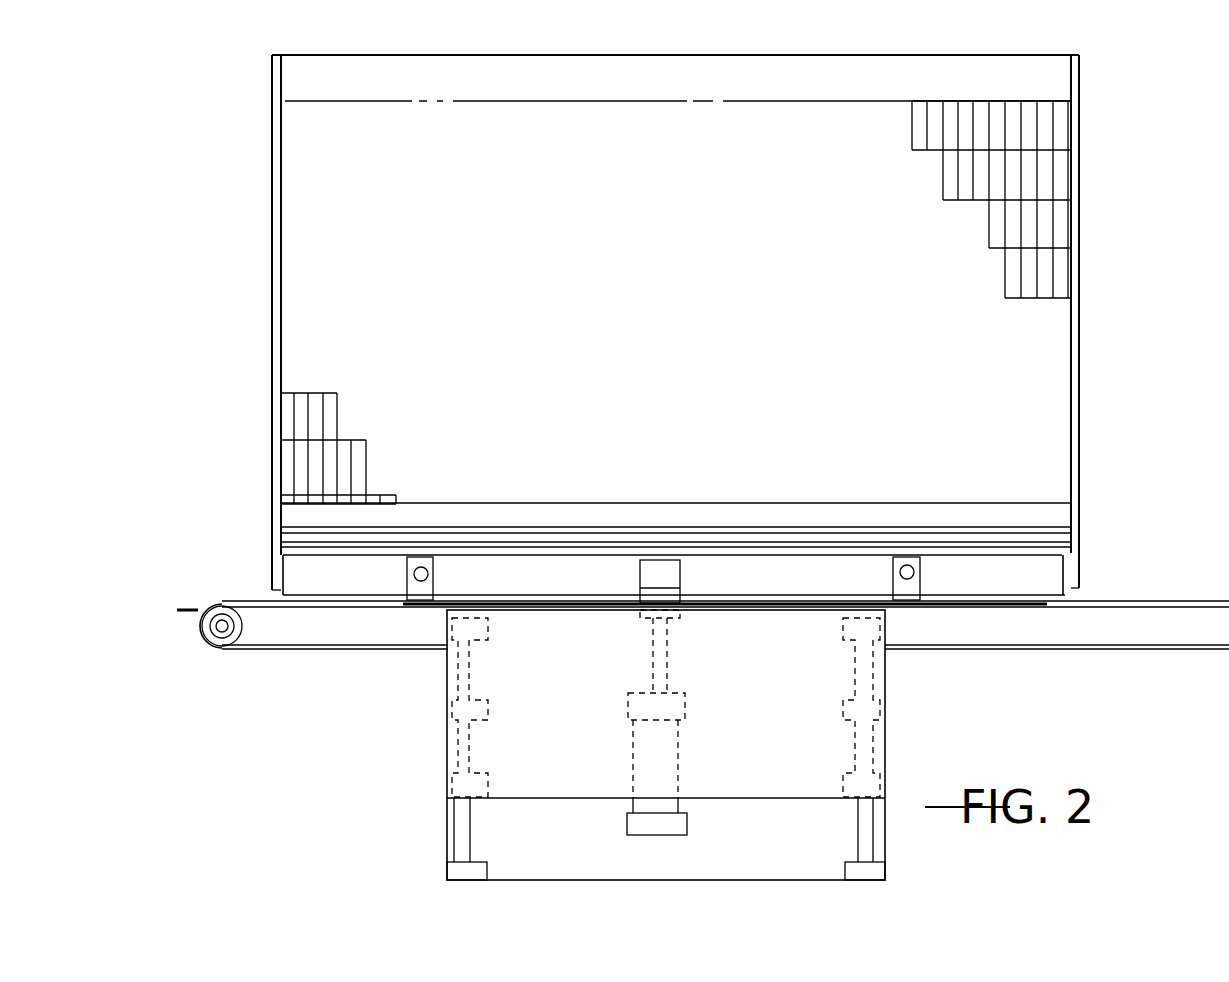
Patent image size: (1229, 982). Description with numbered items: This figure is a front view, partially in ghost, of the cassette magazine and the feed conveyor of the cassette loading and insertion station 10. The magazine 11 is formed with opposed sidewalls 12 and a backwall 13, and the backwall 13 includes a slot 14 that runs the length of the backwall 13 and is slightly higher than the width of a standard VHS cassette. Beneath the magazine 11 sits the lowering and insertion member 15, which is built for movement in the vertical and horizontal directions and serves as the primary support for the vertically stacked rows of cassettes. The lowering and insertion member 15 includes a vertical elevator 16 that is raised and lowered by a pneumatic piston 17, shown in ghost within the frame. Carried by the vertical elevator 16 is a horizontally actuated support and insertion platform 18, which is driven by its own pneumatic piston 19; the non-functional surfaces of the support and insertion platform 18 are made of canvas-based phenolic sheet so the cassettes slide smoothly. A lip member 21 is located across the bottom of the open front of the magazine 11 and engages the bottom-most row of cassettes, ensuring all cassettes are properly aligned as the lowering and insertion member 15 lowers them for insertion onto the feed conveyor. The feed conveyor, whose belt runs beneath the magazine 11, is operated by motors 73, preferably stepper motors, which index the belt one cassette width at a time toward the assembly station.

The cassette loading and insertion station 10 is at (1103, 320).
The magazine 11 is at (1052, 80).
The sidewalls 12 is at (1075, 178).
The backwall 13 is at (695, 91).
The slot 14 is at (1065, 568).
The lowering and insertion member 15 is at (1008, 577).
The vertical elevator 16 is at (780, 607).
The pneumatic piston 17 is at (660, 748).
The support and insertion platform 18 is at (371, 578).
The pneumatic piston 19 is at (660, 570).
The lip member 21 is at (1057, 515).
The motors 73 is at (230, 648).